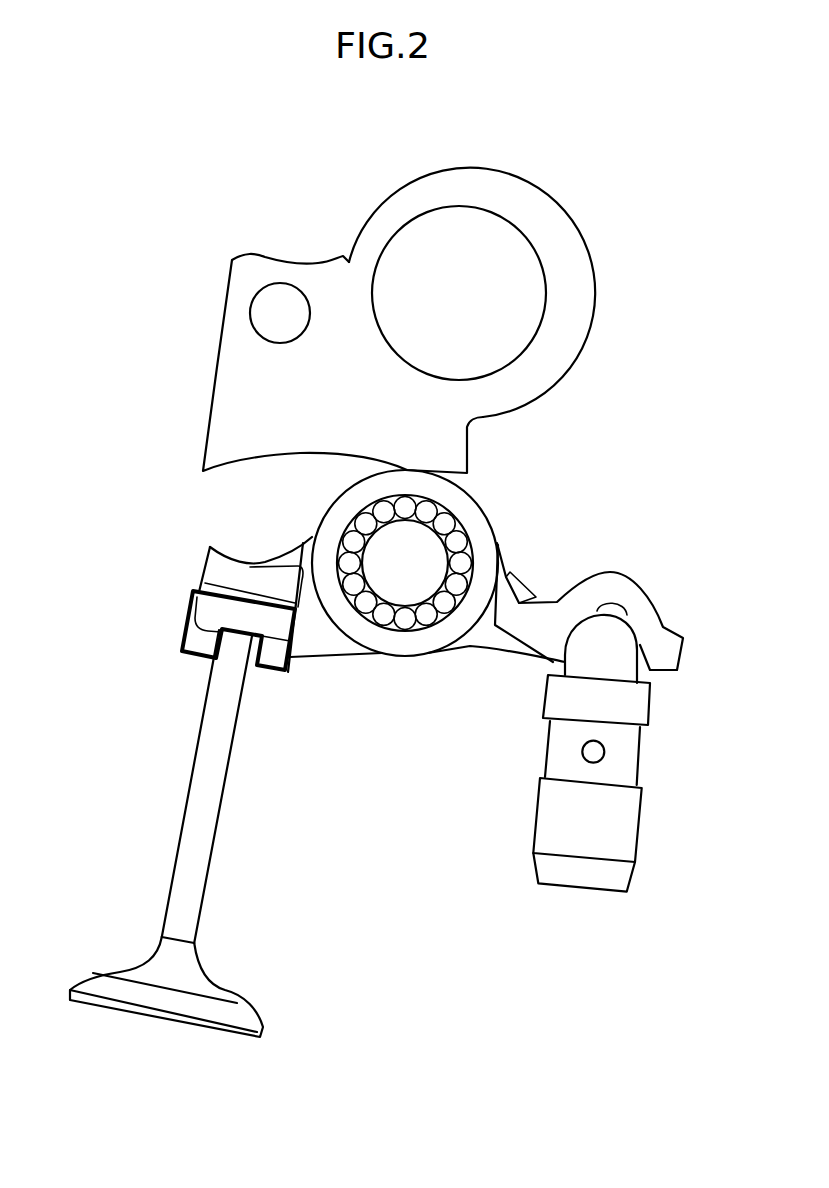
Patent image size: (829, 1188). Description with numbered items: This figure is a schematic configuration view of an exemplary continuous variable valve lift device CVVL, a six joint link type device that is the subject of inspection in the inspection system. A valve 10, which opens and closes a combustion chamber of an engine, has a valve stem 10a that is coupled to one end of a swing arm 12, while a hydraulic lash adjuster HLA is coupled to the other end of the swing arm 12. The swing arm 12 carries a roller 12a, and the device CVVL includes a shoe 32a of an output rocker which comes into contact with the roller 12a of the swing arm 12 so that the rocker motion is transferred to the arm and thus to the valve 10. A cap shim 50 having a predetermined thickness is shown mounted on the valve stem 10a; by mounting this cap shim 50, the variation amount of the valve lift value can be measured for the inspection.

The continuous variable valve lift device CVVL is at (582, 212).
The shoe 32a is at (217, 367).
The roller 12a is at (478, 523).
The swing arm 12 is at (495, 645).
The cap shim 50 is at (181, 621).
The valve stem 10a is at (213, 813).
The valve 10 is at (183, 833).
The hydraulic lash adjuster HLA is at (650, 817).